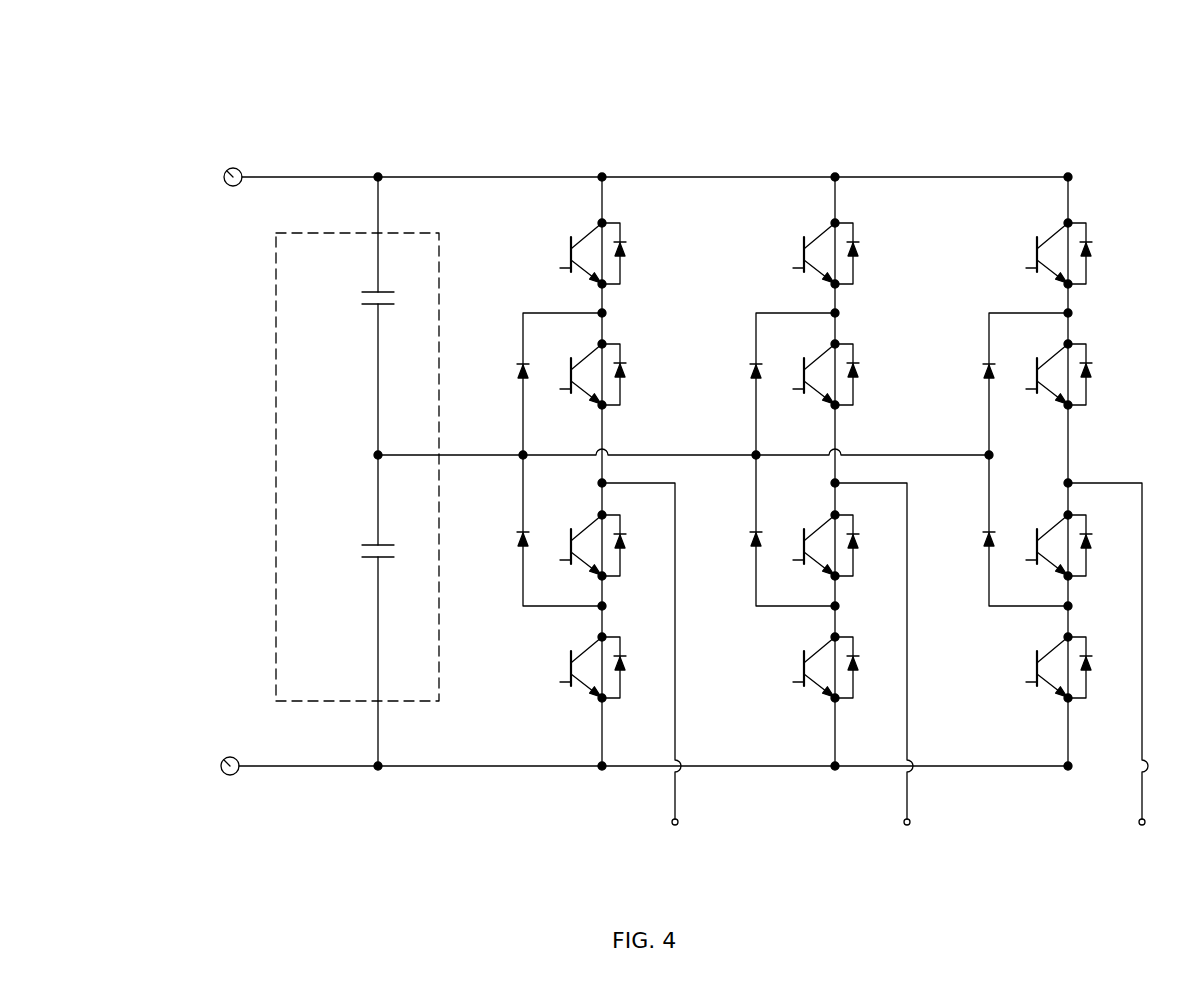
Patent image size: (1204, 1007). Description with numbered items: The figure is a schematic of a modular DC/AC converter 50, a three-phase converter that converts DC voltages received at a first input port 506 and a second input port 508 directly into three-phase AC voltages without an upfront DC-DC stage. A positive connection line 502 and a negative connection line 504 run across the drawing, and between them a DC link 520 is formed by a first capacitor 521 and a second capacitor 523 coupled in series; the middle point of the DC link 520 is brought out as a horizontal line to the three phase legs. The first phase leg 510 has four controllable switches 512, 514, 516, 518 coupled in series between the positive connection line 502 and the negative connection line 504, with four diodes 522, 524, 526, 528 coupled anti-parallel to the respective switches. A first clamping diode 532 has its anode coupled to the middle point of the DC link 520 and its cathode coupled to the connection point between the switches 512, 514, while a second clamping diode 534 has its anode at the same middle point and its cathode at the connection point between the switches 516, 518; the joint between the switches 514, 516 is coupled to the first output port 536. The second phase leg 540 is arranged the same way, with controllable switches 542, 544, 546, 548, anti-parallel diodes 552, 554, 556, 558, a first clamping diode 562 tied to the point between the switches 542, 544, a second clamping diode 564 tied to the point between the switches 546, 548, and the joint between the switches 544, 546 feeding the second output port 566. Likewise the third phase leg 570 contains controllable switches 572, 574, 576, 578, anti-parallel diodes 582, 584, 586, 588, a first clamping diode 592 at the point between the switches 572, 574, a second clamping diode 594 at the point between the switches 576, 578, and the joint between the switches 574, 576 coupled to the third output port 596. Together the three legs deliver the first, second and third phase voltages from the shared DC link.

The modular DC/AC converter 50 is at (316, 90).
The positive connection line 502 is at (312, 177).
The negative connection line 504 is at (331, 768).
The first input port 506 is at (228, 170).
The second input port 508 is at (225, 760).
The first phase leg 510 is at (597, 152).
The controllable switch 512 is at (568, 258).
The controllable switch 514 is at (568, 379).
The controllable switch 516 is at (568, 550).
The controllable switch 518 is at (568, 672).
The DC link 520 is at (304, 471).
The first capacitor 521 is at (368, 306).
The second capacitor 523 is at (368, 559).
The diode 522 is at (624, 245).
The diode 524 is at (624, 366).
The diode 526 is at (624, 537).
The diode 528 is at (624, 659).
The first clamping diode 532 is at (518, 374).
The second clamping diode 534 is at (518, 542).
The first output port 536 is at (672, 824).
The second phase leg 540 is at (832, 152).
The controllable switch 542 is at (801, 258).
The controllable switch 544 is at (801, 379).
The controllable switch 546 is at (801, 550).
The controllable switch 548 is at (801, 672).
The diode 552 is at (857, 245).
The diode 554 is at (857, 366).
The diode 556 is at (857, 537).
The diode 558 is at (857, 659).
The first clamping diode 562 is at (751, 374).
The second clamping diode 564 is at (751, 542).
The second output port 566 is at (905, 824).
The third phase leg 570 is at (1072, 152).
The controllable switch 572 is at (1034, 258).
The controllable switch 574 is at (1034, 379).
The controllable switch 576 is at (1034, 550).
The controllable switch 578 is at (1034, 672).
The diode 582 is at (1090, 245).
The diode 584 is at (1090, 366).
The diode 586 is at (1090, 537).
The diode 588 is at (1090, 659).
The first clamping diode 592 is at (984, 374).
The second clamping diode 594 is at (984, 542).
The third output port 596 is at (1139, 824).